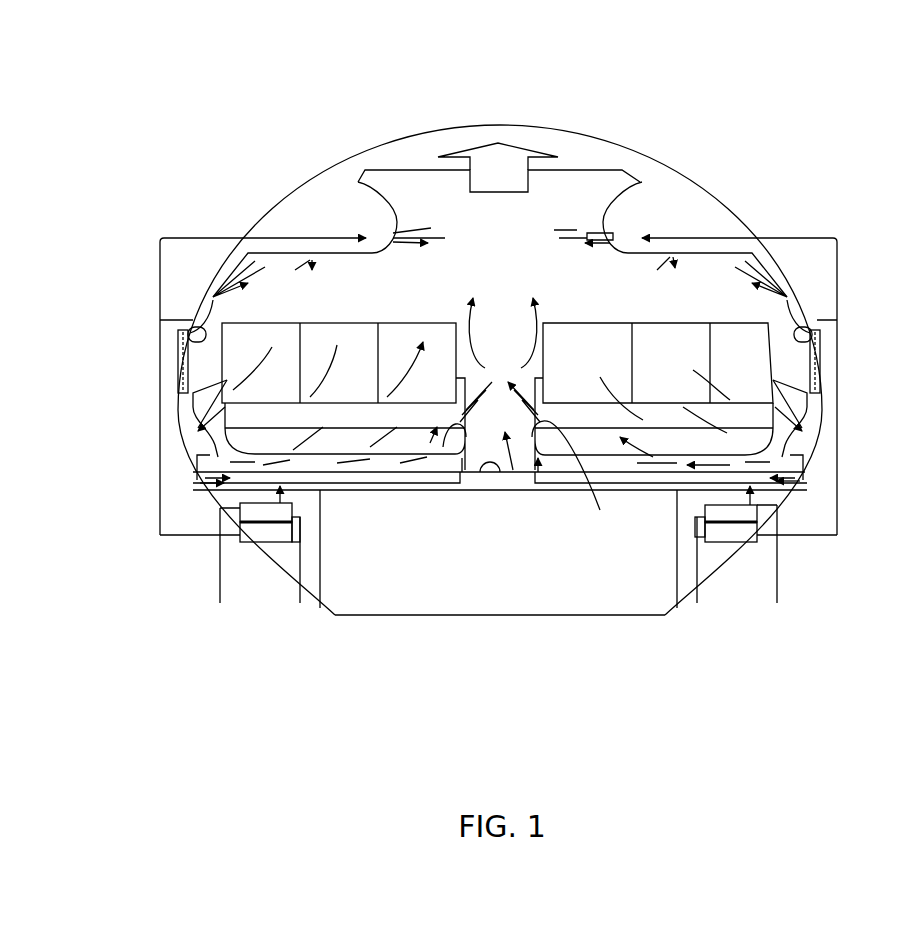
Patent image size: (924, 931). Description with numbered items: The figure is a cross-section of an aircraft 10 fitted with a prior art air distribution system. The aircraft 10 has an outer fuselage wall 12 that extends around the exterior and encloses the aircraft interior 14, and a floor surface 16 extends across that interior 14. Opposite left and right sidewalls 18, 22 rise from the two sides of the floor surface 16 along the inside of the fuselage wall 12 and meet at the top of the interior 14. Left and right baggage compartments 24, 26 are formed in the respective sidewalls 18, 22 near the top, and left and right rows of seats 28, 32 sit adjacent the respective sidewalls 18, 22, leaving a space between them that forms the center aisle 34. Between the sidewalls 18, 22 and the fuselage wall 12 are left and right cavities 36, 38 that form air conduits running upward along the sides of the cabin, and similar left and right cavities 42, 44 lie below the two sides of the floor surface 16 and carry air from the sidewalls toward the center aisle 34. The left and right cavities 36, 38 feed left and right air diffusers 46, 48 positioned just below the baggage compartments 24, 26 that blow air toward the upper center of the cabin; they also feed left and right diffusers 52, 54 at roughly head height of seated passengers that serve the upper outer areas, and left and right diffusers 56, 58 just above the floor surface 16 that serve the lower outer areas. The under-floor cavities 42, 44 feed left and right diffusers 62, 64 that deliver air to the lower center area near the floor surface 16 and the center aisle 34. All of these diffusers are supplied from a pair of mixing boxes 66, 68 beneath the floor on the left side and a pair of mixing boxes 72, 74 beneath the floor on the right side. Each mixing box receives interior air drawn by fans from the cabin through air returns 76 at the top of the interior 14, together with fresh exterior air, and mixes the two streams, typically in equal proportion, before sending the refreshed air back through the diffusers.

The aircraft 10 is at (739, 181).
The outer fuselage wall 12 is at (750, 222).
The aircraft interior 14 is at (494, 268).
The floor surface 16 is at (505, 470).
The left sidewall 18 is at (178, 355).
The right sidewall 22 is at (820, 347).
The left baggage compartment 24 is at (385, 170).
The right baggage compartment 26 is at (603, 180).
The left row of seats 28 is at (298, 320).
The right row of seats 32 is at (641, 320).
The center aisle 34 is at (513, 470).
The left cavity 36 is at (180, 404).
The right cavity 38 is at (820, 404).
The left under-floor cavity 42 is at (212, 473).
The right under-floor cavity 44 is at (797, 480).
The left air diffuser 46 is at (392, 233).
The right air diffuser 48 is at (587, 233).
The left air diffuser 52 is at (210, 297).
The right air diffuser 54 is at (783, 300).
The left air diffuser 56 is at (197, 425).
The right air diffuser 58 is at (807, 423).
The left diffuser 62 is at (443, 447).
The right diffuser 64 is at (600, 510).
The mixing box 66 is at (260, 515).
The mixing box 68 is at (268, 535).
The mixing box 72 is at (737, 513).
The mixing box 74 is at (737, 533).
The air return 76 is at (500, 158).